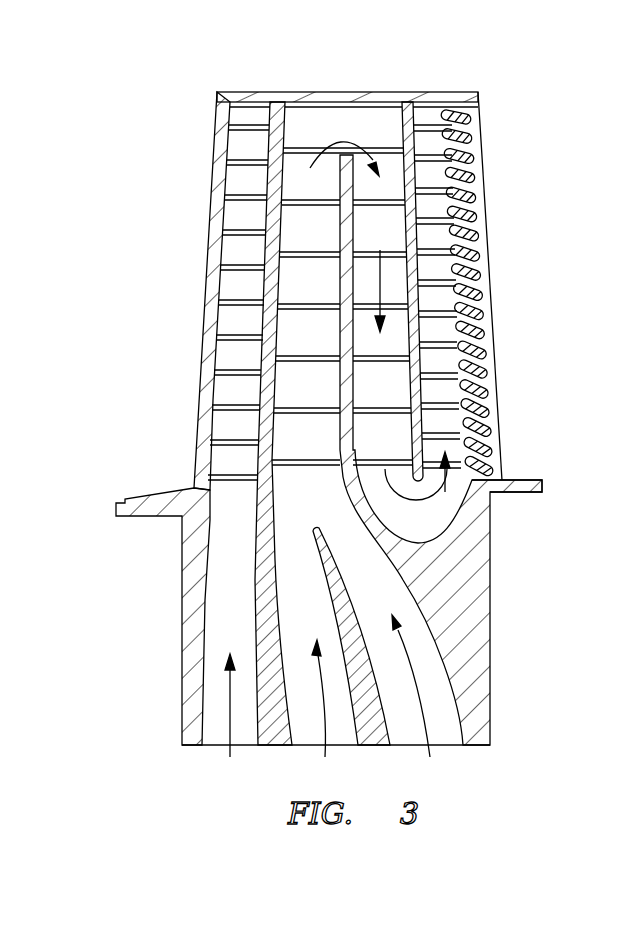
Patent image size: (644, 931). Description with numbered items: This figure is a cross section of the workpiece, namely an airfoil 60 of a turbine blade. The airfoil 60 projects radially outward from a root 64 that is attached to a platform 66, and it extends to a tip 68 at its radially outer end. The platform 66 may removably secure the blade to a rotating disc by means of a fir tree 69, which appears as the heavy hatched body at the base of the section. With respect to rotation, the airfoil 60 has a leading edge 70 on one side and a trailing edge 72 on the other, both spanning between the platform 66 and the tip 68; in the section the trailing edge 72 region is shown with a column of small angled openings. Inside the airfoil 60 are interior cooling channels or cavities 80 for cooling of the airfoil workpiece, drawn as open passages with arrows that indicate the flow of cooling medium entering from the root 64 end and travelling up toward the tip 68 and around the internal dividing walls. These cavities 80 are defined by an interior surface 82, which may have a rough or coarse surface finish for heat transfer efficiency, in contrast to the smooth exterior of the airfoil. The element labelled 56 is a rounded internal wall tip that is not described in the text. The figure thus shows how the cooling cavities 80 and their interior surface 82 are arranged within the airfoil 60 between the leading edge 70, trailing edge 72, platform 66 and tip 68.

The rounded tip of inner wall 56 is at (412, 472).
The airfoil 60 is at (505, 188).
The root 64 is at (195, 470).
The platform 66 is at (530, 480).
The tip 68 is at (384, 92).
The fir tree 69 is at (490, 563).
The leading edge 70 is at (208, 260).
The trailing edge 72 is at (497, 238).
The interior cooling channels or cavities 80 is at (322, 483).
The interior surface 82 is at (210, 380).